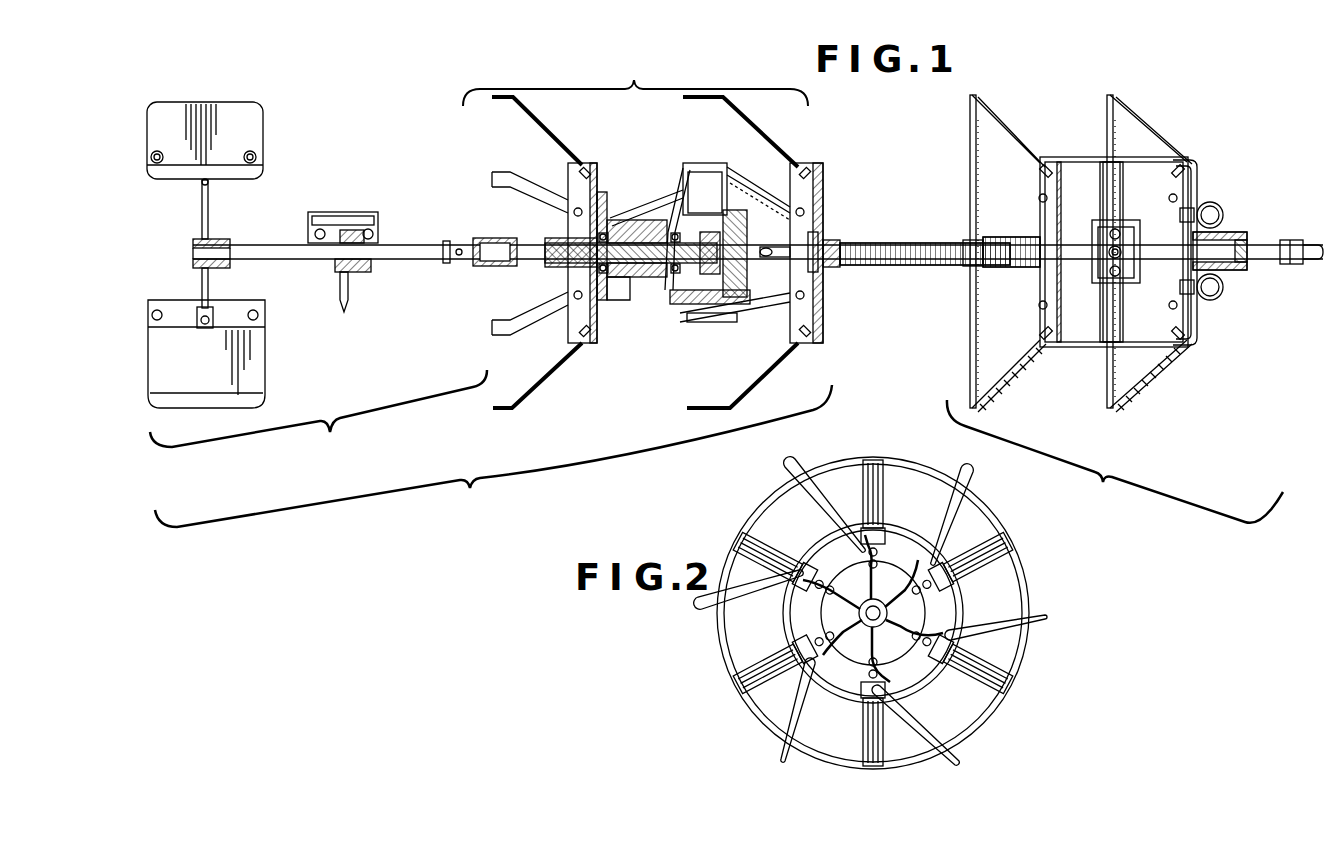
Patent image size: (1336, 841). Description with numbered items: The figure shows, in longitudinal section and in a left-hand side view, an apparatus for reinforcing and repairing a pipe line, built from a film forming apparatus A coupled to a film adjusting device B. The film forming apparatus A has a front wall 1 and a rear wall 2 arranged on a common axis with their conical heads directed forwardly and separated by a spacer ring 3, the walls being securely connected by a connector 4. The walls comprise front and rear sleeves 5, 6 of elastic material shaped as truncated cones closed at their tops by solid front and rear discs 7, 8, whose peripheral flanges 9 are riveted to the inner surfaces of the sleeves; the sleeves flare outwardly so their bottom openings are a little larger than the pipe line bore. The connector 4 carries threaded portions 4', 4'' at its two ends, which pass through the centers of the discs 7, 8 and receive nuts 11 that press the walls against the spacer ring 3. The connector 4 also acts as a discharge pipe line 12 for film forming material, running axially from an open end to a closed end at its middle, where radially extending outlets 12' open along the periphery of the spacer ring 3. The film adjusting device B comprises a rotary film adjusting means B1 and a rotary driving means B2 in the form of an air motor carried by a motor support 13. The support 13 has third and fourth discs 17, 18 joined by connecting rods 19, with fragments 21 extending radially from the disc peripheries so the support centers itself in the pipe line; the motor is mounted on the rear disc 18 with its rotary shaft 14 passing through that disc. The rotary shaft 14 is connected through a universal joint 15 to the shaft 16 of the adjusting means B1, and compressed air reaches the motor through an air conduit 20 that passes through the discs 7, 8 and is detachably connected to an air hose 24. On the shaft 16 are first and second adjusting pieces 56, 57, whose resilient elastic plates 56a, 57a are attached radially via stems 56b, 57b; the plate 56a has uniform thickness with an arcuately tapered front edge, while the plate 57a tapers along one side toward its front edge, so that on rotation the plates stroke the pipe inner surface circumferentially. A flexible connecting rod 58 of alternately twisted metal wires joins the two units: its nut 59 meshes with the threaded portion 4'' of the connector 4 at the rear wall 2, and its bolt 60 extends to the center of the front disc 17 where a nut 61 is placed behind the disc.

In FIG. 1, the front wall 1 is at (1152, 135).
In FIG. 1, the rear wall 2 is at (1013, 136).
In FIG. 2, the rear wall 2 is at (716, 645).
In FIG. 1, the spacer ring 3 is at (1080, 160).
In FIG. 1, the connector 4 is at (1104, 251).
In FIG. 1, the threaded portion 4' is at (1228, 265).
In FIG. 1, the threaded portion 4'' is at (1011, 264).
In FIG. 1, the front sleeve 5 is at (1120, 373).
In FIG. 1, the rear sleeve 6 is at (976, 352).
In FIG. 1, the front disc 7 is at (1193, 201).
In FIG. 1, the rear disc 8 is at (1058, 207).
In FIG. 1, the flanges 9 is at (1030, 191).
In FIG. 1, the nuts 11 is at (1033, 290).
In FIG. 1, the discharge pipe line 12 is at (1132, 252).
In FIG. 1, the radially extending outlets 12' is at (1094, 252).
In FIG. 1, the motor support 13 is at (657, 229).
In FIG. 1, the rotary shaft 14 is at (575, 260).
In FIG. 1, the universal joint 15 is at (469, 263).
In FIG. 1, the shaft 16 is at (280, 259).
In FIG. 2, the shaft 16 is at (880, 600).
In FIG. 1, the third disc 17 is at (818, 208).
In FIG. 1, the fourth disc 18 is at (608, 196).
In FIG. 2, the fourth disc 18 is at (852, 690).
In FIG. 1, the connecting rods 19 is at (770, 310).
In FIG. 1, the air conduit 20 is at (782, 259).
In FIG. 1, the fragments 21 is at (574, 160).
In FIG. 2, the fragments 21 is at (868, 746).
In FIG. 1, the air hose 24 is at (1306, 244).
In FIG. 1, the first adjusting piece 56 is at (323, 236).
In FIG. 1, the elastic plate 56a is at (336, 212).
In FIG. 2, the elastic plate 56a is at (972, 520).
In FIG. 1, the stem 56b is at (328, 240).
In FIG. 2, the stem 56b is at (905, 555).
In FIG. 1, the second adjusting piece 57 is at (235, 240).
In FIG. 1, the elastic plate 57a is at (263, 121).
In FIG. 2, the elastic plate 57a is at (1040, 617).
In FIG. 1, the stem 57b is at (208, 205).
In FIG. 2, the stem 57b is at (930, 680).
In FIG. 1, the flexible connecting rod 58 is at (915, 243).
In FIG. 1, the nut 59 is at (961, 271).
In FIG. 1, the bolt 60 is at (828, 243).
In FIG. 1, the nut 61 is at (818, 278).
In FIG. 1, the film forming apparatus A is at (1115, 461).
In FIG. 1, the film adjusting device B is at (493, 456).
In FIG. 1, the rotary film adjusting means B1 is at (318, 415).
In FIG. 1, the rotary driving means B2 is at (648, 318).